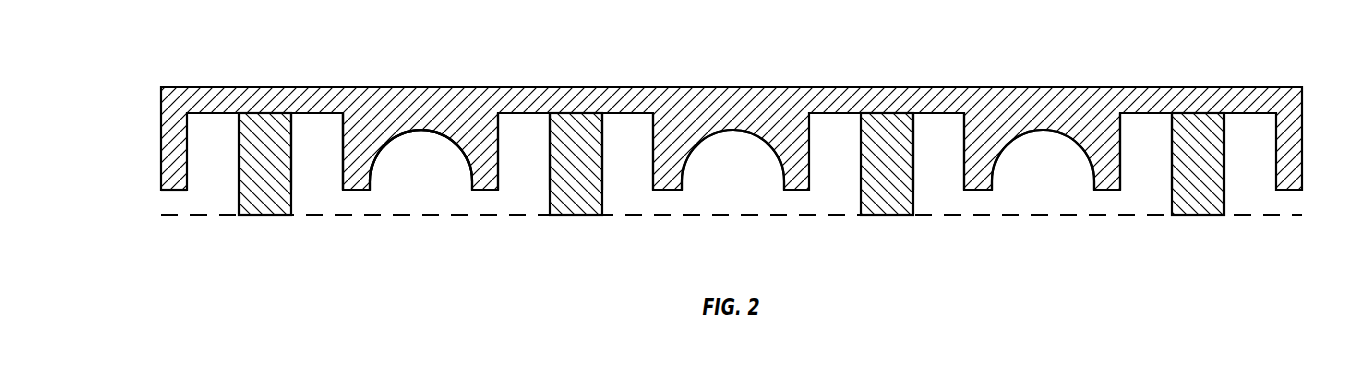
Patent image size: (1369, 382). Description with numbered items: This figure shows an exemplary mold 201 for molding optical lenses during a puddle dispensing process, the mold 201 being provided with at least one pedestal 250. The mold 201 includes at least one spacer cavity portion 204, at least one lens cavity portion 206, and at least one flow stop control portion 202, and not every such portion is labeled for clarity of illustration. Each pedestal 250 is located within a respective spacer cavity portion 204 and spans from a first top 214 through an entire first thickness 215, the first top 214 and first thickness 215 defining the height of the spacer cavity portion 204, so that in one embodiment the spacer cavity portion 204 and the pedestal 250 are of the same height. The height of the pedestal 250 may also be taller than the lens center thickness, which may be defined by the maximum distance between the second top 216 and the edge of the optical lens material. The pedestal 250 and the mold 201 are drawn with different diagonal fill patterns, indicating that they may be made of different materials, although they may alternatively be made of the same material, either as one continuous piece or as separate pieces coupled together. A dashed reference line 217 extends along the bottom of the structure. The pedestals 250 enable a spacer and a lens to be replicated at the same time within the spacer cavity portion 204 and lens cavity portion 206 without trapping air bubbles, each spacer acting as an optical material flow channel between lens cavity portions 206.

The mold 201 is at (157, 72).
The flow stop control portion 202 is at (367, 213).
The spacer cavity portion 204 is at (302, 143).
The lens cavity portion 206 is at (405, 174).
The first top 214 is at (321, 113).
The first thickness 215 is at (198, 215).
The second top 216 is at (403, 129).
The reference plane 217 is at (459, 216).
The pedestal 250 is at (731, 164).